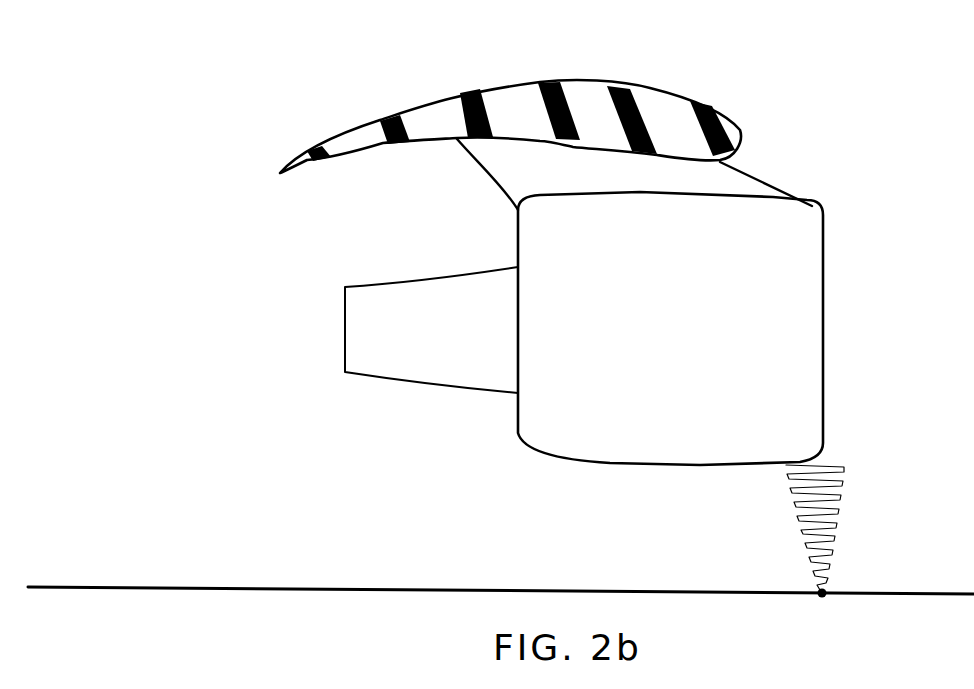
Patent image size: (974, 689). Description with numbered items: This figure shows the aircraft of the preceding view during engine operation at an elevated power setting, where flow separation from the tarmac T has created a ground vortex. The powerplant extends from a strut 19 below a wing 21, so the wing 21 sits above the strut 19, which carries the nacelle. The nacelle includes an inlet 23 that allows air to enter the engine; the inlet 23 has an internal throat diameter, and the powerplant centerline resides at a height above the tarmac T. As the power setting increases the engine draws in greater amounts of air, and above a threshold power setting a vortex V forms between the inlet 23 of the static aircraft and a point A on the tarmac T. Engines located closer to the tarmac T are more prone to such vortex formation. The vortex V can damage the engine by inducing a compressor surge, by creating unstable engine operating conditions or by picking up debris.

The wing 21 is at (583, 92).
The strut 19 is at (579, 180).
The inlet 23 is at (822, 337).
The vortex V is at (847, 502).
The tarmac T is at (168, 587).
The point A is at (830, 600).